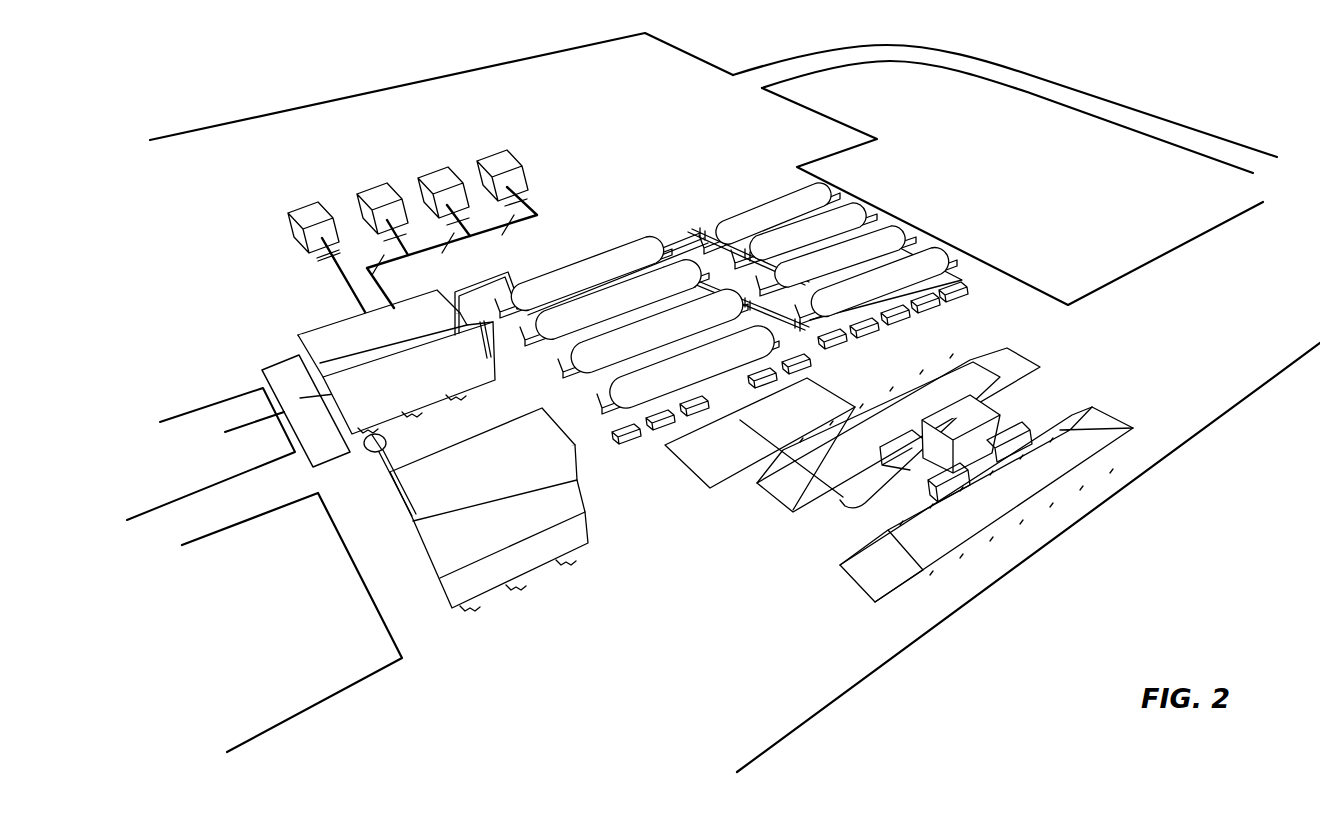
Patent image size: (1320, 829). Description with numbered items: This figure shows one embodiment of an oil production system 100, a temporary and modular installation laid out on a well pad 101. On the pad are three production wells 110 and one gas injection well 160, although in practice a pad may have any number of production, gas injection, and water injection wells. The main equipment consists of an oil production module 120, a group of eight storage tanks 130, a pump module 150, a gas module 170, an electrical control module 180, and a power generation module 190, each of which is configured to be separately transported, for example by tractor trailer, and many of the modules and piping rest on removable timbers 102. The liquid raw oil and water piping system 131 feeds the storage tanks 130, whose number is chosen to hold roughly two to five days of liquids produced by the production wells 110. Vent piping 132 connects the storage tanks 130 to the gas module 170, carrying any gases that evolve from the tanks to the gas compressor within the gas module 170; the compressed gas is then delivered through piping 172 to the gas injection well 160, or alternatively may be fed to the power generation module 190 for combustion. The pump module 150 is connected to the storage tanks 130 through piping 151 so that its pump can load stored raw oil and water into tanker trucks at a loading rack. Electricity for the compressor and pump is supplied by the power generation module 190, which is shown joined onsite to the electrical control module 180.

The oil production system 100 is at (968, 120).
The well pad 101 is at (648, 148).
The removable timbers 102 is at (525, 197).
The production wells 110 is at (493, 165).
The oil production module 120 is at (317, 340).
The storage tanks 130 is at (960, 267).
The liquid raw oil and water piping system 131 is at (497, 273).
The vent piping 132 is at (492, 338).
The pump module 150 is at (983, 410).
The piping 151 is at (858, 500).
The gas injection well 160 is at (308, 217).
The gas module 170 is at (348, 392).
The piping 172 is at (330, 277).
The electrical control module 180 is at (388, 498).
The power generation module 190 is at (410, 553).